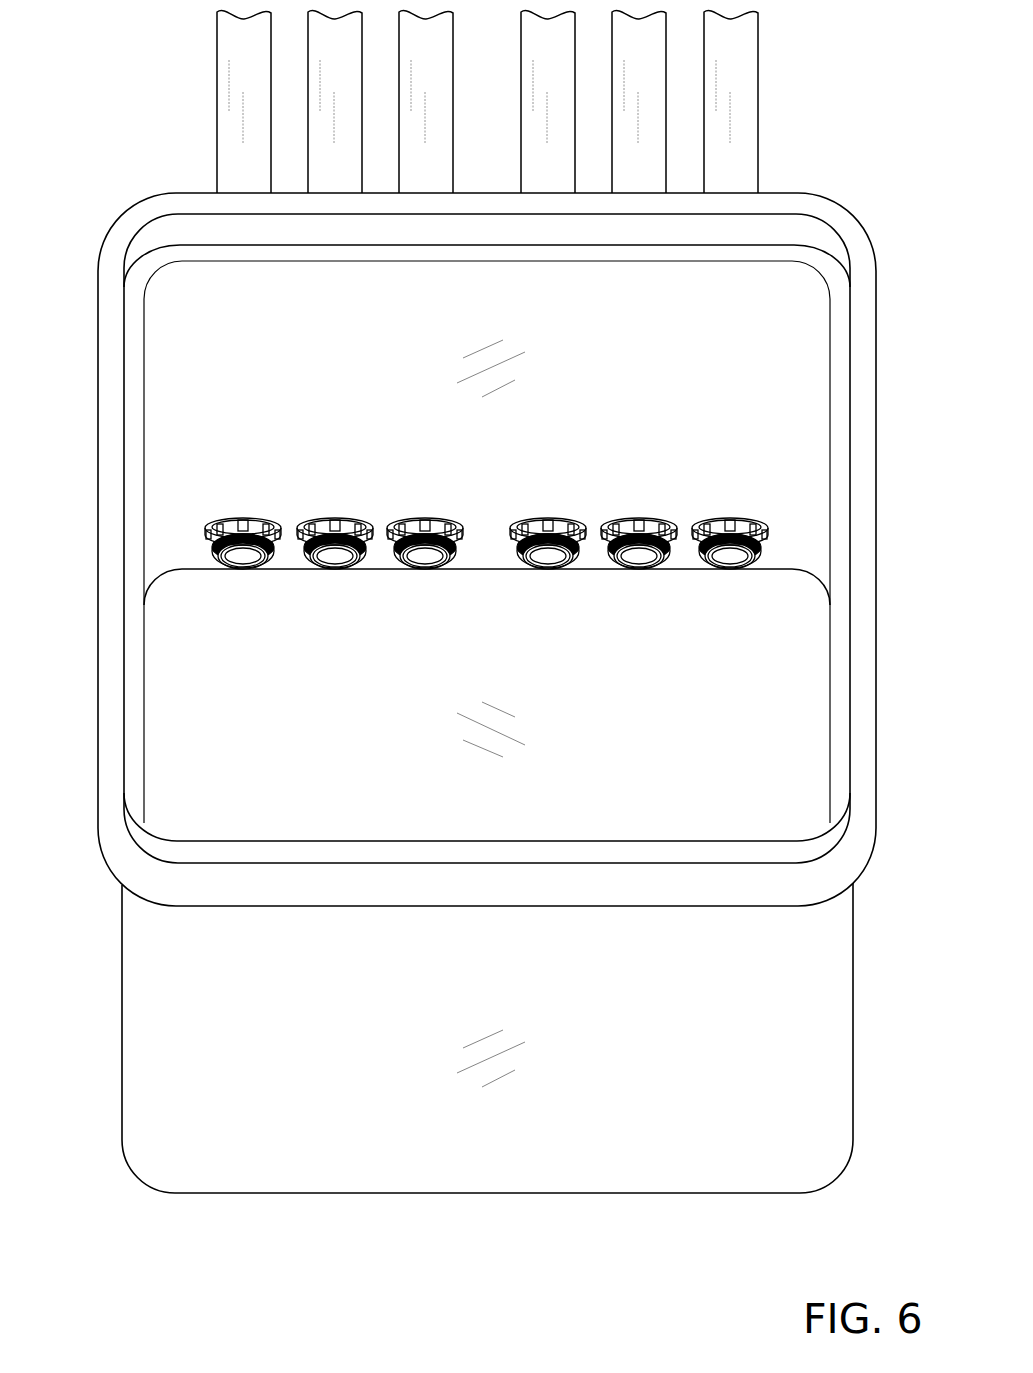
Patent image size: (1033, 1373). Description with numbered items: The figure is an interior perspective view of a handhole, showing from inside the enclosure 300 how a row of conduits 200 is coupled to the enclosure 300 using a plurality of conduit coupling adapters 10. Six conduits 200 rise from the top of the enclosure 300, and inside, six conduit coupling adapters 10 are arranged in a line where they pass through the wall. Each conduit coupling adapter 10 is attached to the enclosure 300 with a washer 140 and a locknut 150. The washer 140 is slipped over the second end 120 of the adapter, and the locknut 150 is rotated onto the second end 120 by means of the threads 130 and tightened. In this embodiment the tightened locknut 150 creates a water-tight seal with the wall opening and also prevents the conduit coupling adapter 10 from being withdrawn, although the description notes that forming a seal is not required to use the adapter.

The conduit coupling adapter 10 is at (216, 569).
The second end 120 is at (262, 560).
The threads 130 is at (245, 572).
The washer 140 is at (234, 518).
The locknut 150 is at (248, 527).
The conduits 200 is at (217, 133).
The enclosure 300 is at (122, 1010).